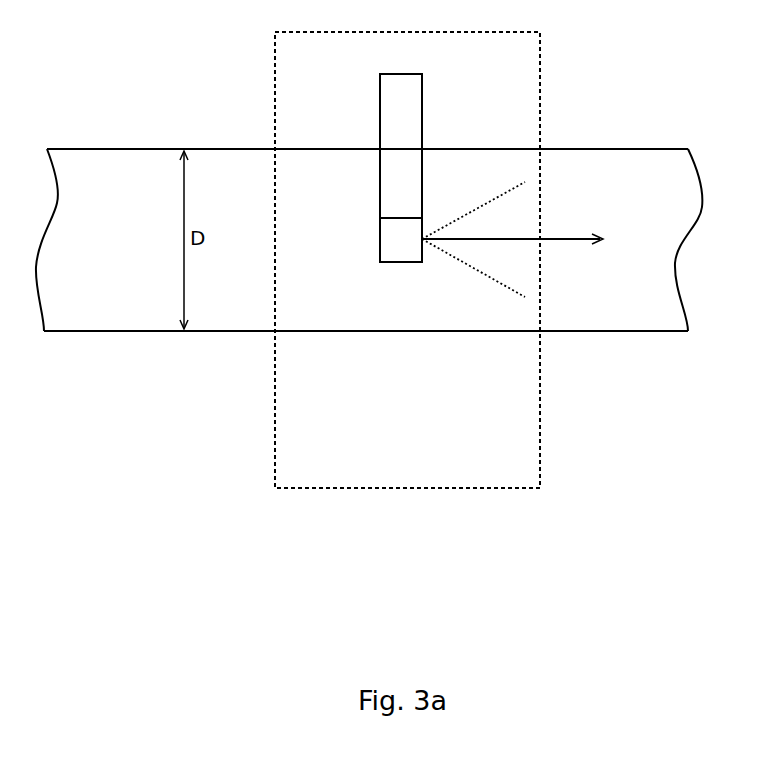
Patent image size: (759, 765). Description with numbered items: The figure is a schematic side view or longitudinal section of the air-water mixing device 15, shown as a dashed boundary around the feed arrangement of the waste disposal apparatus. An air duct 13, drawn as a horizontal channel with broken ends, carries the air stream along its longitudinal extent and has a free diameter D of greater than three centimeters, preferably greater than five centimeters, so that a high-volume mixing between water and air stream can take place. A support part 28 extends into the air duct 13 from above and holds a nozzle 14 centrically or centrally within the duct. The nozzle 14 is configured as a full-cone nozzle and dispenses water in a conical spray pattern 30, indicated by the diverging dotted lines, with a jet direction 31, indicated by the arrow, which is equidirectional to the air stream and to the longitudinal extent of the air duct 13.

The air duct 13 is at (130, 148).
The nozzle 14 is at (413, 250).
The air-water mixing device 15 is at (527, 478).
The support part 28 is at (422, 100).
The conical spray pattern 30 is at (503, 192).
The jet direction 31 is at (555, 238).